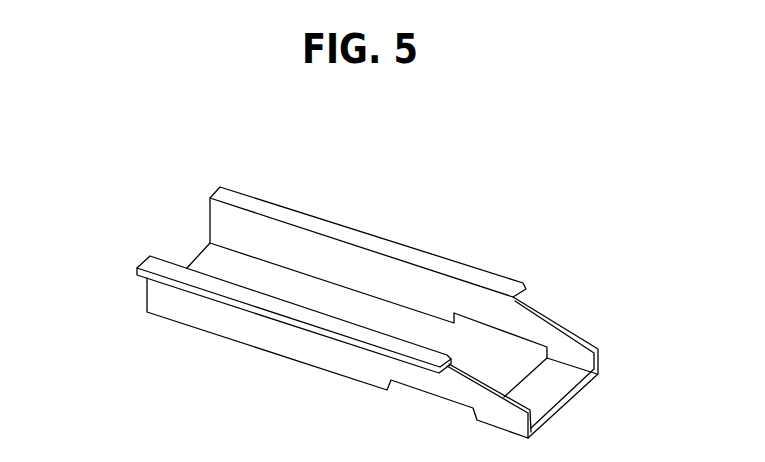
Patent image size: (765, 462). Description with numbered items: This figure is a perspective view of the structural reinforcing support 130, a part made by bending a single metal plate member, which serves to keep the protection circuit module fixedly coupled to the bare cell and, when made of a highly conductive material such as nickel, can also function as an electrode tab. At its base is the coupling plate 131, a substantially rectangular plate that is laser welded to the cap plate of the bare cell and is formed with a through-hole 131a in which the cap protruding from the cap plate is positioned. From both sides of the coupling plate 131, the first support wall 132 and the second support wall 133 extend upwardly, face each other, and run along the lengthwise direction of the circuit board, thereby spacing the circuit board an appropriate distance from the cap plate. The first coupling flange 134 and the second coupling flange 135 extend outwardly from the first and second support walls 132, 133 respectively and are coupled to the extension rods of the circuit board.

The structural reinforcing support 130 is at (454, 225).
The coupling plate 131 is at (203, 257).
The through-hole 131a is at (511, 383).
The first support wall 132 is at (286, 344).
The second support wall 133 is at (533, 330).
The first coupling flange 134 is at (146, 264).
The second coupling flange 135 is at (237, 195).